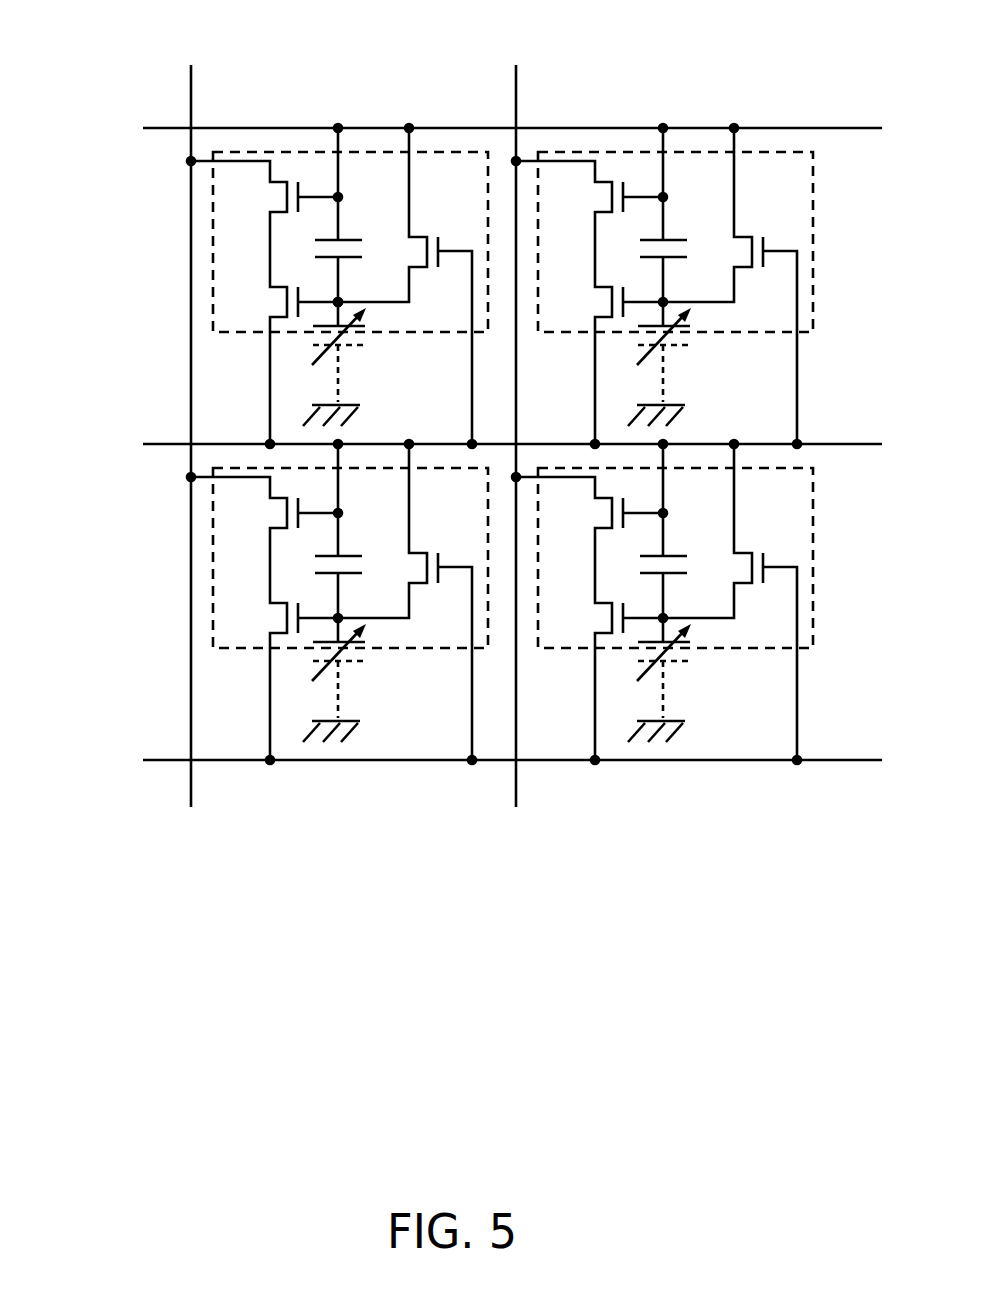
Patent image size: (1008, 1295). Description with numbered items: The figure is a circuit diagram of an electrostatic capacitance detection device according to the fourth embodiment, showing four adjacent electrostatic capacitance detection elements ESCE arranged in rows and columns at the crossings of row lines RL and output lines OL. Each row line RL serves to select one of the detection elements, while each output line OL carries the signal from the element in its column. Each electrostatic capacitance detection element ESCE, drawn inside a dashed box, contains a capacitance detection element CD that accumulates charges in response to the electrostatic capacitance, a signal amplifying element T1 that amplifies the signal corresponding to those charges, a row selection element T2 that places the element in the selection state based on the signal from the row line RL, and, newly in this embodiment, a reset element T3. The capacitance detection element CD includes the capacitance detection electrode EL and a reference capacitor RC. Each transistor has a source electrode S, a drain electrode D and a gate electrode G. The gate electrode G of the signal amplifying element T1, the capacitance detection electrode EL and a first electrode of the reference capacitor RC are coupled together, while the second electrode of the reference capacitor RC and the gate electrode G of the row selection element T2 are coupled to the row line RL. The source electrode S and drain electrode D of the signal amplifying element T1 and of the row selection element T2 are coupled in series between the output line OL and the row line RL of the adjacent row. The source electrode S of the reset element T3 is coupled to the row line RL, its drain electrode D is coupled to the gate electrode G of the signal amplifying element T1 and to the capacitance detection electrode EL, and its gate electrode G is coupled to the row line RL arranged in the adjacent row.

The output line OL is at (362, 407).
The row line RL is at (468, 432).
The signal amplifying element T1 is at (464, 507).
The row selection element T2 is at (425, 360).
The reset element T3 is at (569, 444).
The reference capacitor RC is at (509, 373).
The capacitance detection element CD is at (368, 331).
The capacitance detection electrode EL is at (322, 312).
The electrostatic capacitance detection element ESCE is at (402, 334).
The drain electrode D is at (352, 225).
The source electrode S is at (349, 278).
The gate electrode G is at (463, 239).